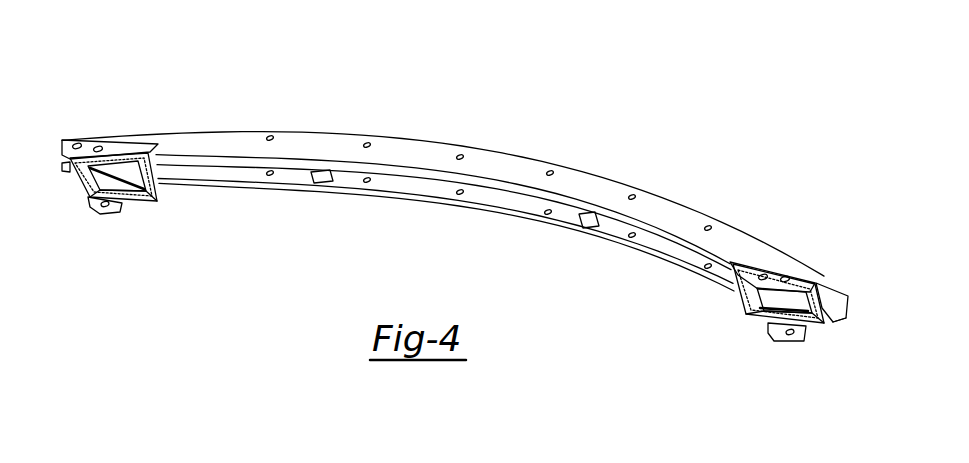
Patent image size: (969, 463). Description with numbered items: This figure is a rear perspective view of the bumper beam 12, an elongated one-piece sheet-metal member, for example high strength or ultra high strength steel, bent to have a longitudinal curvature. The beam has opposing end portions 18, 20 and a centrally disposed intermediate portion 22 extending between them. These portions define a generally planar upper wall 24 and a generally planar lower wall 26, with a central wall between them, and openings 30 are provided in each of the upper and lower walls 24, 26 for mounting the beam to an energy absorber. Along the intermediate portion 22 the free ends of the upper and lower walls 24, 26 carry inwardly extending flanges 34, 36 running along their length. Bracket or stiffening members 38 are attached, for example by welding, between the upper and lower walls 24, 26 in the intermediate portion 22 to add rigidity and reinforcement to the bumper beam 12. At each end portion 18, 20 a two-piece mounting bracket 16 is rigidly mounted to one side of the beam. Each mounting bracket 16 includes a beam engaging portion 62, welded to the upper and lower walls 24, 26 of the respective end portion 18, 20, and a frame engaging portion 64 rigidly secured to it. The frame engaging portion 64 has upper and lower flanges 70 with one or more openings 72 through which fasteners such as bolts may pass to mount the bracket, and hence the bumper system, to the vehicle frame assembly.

The bumper beam 12 is at (553, 110).
The mounting bracket 16 is at (120, 160).
The end portion 18 is at (843, 321).
The end portion 20 is at (68, 168).
The intermediate portion 22 is at (498, 150).
The upper wall 24 is at (405, 142).
The lower wall 26 is at (413, 200).
The openings 30 is at (270, 136).
The inwardly extending flange 34 is at (527, 190).
The inwardly extending flange 36 is at (510, 210).
The bracket/stiffening member 38 is at (315, 181).
The beam engaging portion 62 is at (155, 180).
The frame engaging portion 64 is at (140, 194).
The upper and lower flanges 70 is at (93, 143).
The openings 72 is at (104, 207).